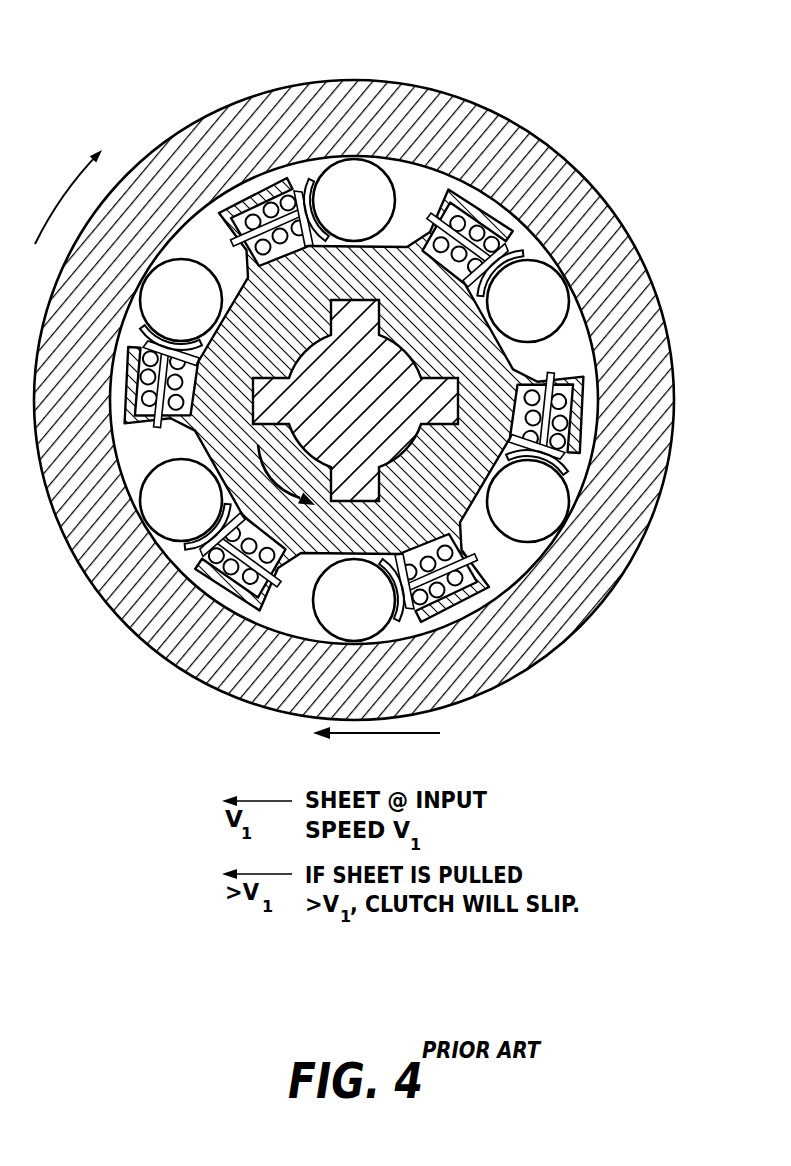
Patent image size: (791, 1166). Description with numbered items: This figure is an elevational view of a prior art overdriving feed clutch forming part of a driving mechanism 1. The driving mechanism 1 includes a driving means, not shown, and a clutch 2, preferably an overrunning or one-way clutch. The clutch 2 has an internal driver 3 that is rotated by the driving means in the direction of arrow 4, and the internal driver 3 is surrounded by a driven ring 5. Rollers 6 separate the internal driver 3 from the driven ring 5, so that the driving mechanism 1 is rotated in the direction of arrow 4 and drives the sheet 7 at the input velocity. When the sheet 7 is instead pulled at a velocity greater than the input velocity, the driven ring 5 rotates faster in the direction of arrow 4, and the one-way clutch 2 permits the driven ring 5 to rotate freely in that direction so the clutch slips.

The driving mechanism 1 is at (688, 80).
The clutch 2 is at (382, 382).
The internal driver 3 is at (455, 482).
The arrow 4 is at (72, 185).
The driven ring 5 is at (672, 344).
The rollers 6 is at (345, 192).
The sheet 7 is at (362, 733).